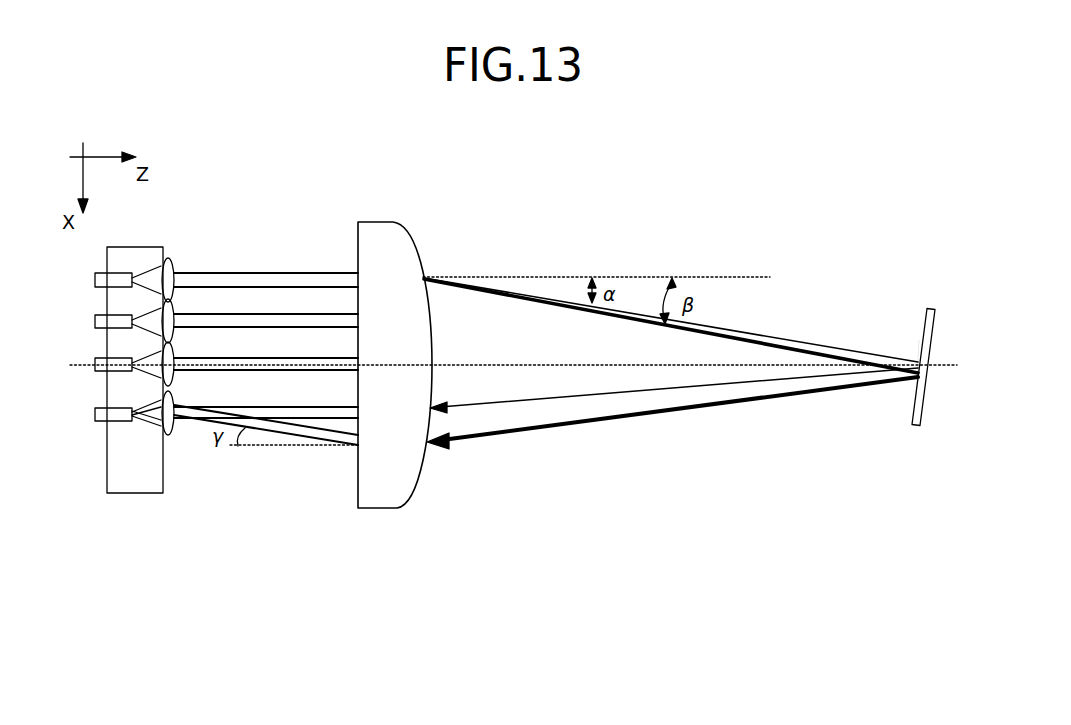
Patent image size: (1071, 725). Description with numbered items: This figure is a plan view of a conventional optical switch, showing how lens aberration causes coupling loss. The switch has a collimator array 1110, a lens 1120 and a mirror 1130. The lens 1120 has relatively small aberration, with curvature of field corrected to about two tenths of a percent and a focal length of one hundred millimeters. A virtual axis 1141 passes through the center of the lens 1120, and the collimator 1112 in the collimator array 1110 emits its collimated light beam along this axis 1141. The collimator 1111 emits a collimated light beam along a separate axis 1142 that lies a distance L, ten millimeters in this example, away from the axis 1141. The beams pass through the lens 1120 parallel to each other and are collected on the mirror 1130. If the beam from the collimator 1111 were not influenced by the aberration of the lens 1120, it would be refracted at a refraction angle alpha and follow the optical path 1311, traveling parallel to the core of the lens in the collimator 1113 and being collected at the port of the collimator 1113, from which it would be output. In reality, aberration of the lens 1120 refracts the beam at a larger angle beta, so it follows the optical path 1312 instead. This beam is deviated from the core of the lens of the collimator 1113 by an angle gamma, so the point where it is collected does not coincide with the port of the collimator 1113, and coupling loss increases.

The collimator array 1110 is at (143, 246).
The collimator 1111 is at (88, 281).
The collimator 1112 is at (88, 366).
The collimator 1113 is at (88, 417).
The lens 1120 is at (384, 221).
The mirror 1130 is at (933, 307).
The axis 1141 is at (945, 373).
The axis 1142 is at (548, 274).
The optical path 1311 is at (498, 402).
The optical path 1312 is at (599, 423).